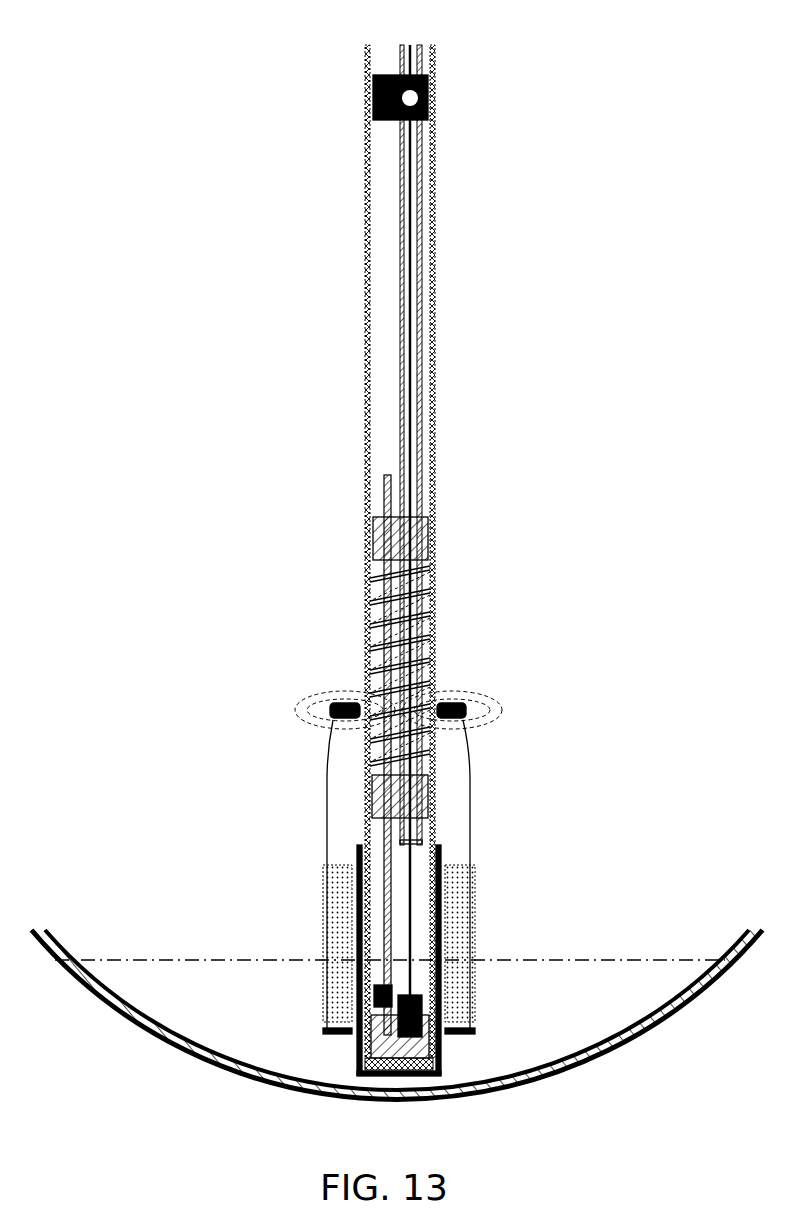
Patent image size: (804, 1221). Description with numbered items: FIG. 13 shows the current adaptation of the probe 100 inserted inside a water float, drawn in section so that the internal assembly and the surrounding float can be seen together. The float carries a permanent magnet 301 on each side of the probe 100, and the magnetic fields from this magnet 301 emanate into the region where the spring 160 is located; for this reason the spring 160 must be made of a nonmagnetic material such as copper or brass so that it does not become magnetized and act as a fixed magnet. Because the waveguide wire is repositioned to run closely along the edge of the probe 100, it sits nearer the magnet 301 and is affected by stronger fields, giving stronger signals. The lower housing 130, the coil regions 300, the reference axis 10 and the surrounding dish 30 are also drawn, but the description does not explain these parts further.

The axis / reference line 10 is at (201, 960).
The dish reflector 30 is at (190, 1064).
The probe 100 is at (322, 328).
The lower housing tube 130 is at (417, 930).
The spring 160 is at (425, 604).
The coils 300 is at (330, 908).
The magnet 301 is at (470, 696).